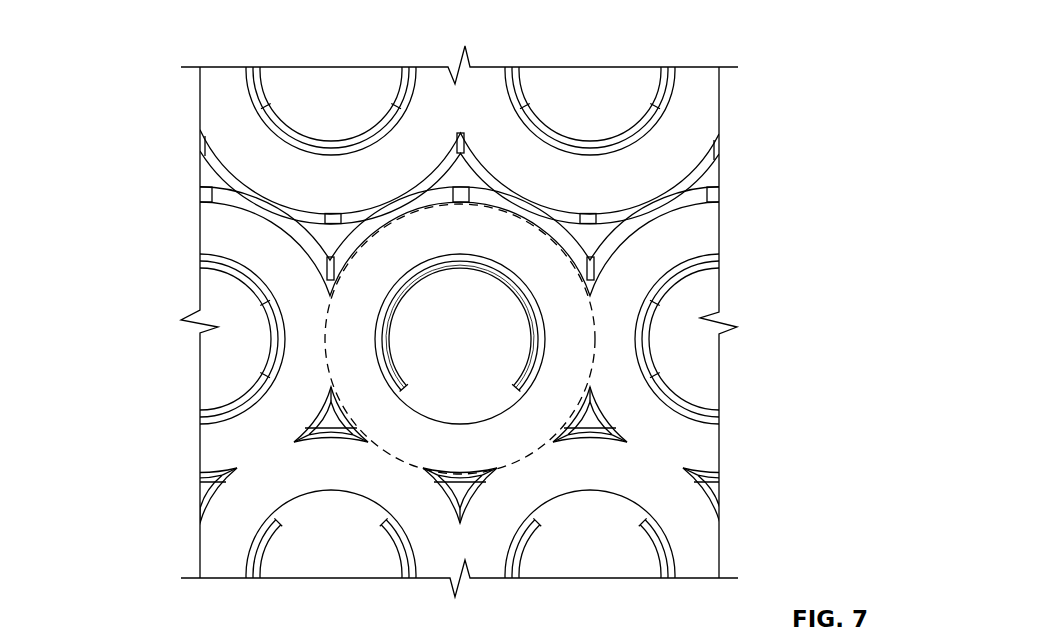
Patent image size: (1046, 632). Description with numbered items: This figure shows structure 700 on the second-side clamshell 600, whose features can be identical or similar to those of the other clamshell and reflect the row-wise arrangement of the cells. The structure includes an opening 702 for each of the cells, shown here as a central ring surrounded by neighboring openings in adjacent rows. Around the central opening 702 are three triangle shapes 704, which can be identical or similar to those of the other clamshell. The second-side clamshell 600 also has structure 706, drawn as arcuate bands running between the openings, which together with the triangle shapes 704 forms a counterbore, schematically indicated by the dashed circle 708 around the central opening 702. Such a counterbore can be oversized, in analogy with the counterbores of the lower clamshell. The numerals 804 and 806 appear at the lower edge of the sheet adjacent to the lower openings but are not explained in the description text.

The structure 700 is at (131, 48).
The second-side clamshell 600 is at (719, 230).
The opening 702 is at (482, 350).
The triangle shape 704 is at (295, 440).
The structure 706 is at (502, 193).
The circle 708 is at (523, 453).
The lower left coil ring 804 is at (331, 561).
The lower right coil ring 806 is at (569, 561).